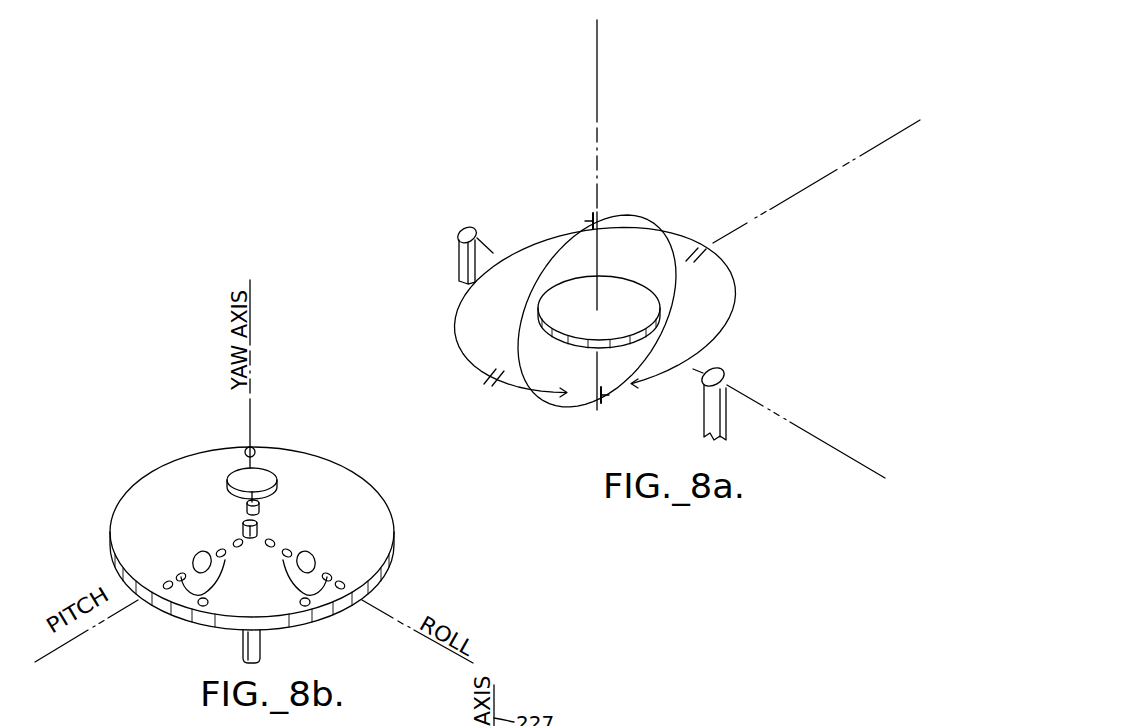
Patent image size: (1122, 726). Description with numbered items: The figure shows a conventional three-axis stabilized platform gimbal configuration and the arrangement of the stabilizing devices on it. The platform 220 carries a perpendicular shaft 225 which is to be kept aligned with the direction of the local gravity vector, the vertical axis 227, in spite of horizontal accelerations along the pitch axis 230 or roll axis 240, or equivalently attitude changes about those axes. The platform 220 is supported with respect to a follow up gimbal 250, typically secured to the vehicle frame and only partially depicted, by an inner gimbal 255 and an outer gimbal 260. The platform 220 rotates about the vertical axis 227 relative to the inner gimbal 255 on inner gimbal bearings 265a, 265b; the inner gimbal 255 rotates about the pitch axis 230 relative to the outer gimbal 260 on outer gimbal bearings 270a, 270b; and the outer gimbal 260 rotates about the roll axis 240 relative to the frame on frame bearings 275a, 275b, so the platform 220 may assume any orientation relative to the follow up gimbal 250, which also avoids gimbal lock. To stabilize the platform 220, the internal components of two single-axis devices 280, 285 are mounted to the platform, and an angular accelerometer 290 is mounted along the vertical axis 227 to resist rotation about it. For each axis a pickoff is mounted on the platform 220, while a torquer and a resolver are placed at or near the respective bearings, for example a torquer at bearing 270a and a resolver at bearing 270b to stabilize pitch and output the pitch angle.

In FIG. 8A, the platform 220 is at (627, 297).
In FIG. 8B, the platform 220 is at (330, 476).
In FIG. 8A, the perpendicular shaft 225 is at (600, 262).
In FIG. 8A, the vertical axis 227 is at (597, 80).
In FIG. 8A, the pitch axis 230 is at (898, 133).
In FIG. 8A, the roll axis 240 is at (869, 469).
In FIG. 8A, the follow up gimbal 250 is at (727, 428).
In FIG. 8A, the inner gimbal 255 is at (567, 240).
In FIG. 8A, the outer gimbal 260 is at (540, 237).
In FIG. 8A, the inner gimbal bearing 265a is at (603, 213).
In FIG. 8A, the inner gimbal bearing 265b is at (596, 404).
In FIG. 8A, the outer gimbal bearing 270a is at (705, 256).
In FIG. 8A, the outer gimbal bearing 270b is at (486, 374).
In FIG. 8A, the frame bearing 275a is at (727, 380).
In FIG. 8A, the frame bearing 275b is at (476, 229).
In FIG. 8B, the single-axis device 280 is at (322, 557).
In FIG. 8B, the single-axis device 285 is at (203, 541).
In FIG. 8B, the angular accelerometer 290 is at (268, 470).